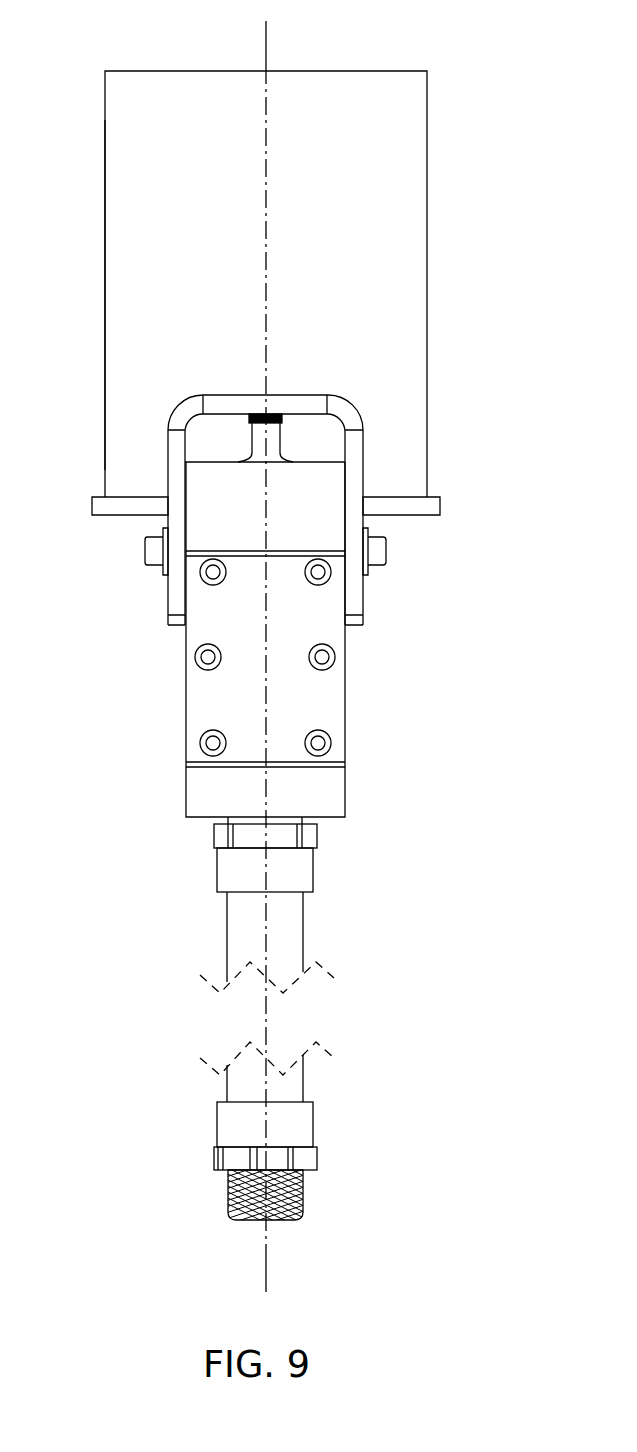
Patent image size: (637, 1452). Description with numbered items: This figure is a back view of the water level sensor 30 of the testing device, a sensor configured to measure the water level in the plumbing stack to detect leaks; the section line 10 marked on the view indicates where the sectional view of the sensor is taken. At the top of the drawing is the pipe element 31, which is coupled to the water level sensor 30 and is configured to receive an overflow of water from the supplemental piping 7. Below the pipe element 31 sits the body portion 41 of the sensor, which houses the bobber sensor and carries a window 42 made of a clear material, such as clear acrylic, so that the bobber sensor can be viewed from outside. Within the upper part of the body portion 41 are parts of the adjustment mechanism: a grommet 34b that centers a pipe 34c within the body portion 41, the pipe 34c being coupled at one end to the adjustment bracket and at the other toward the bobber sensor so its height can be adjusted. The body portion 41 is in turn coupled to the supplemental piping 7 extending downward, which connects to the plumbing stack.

The supplemental piping 7 is at (230, 913).
The section line 10- 10 is at (266, 21).
The water level sensor 30 is at (325, 345).
The pipe element 31 is at (122, 288).
The grommet 34b is at (233, 465).
The pipe 34c is at (286, 420).
The body portion 41 is at (202, 783).
The window 42 is at (303, 698).